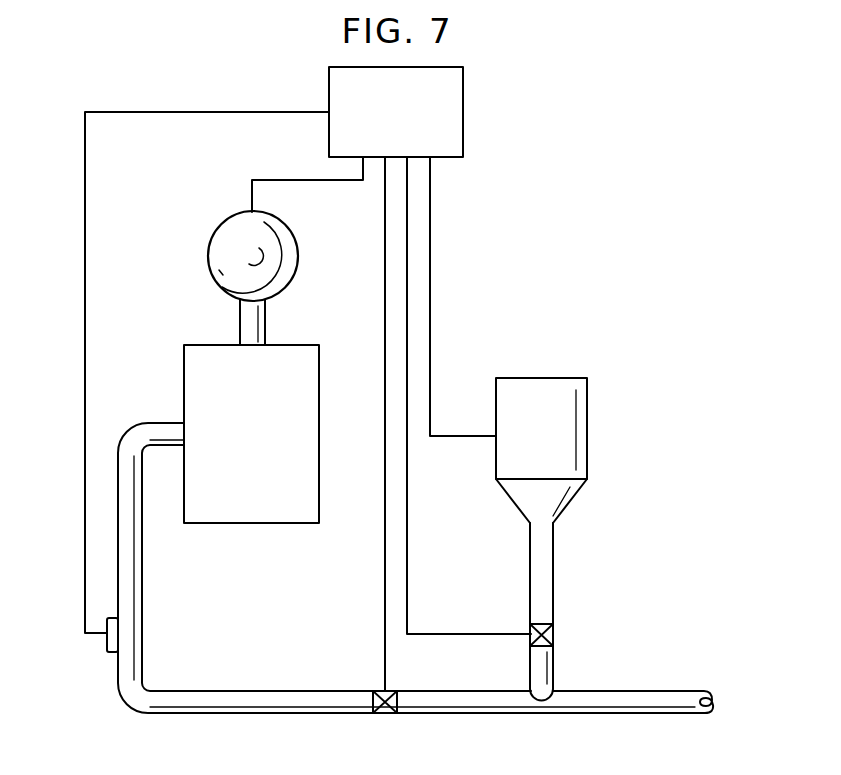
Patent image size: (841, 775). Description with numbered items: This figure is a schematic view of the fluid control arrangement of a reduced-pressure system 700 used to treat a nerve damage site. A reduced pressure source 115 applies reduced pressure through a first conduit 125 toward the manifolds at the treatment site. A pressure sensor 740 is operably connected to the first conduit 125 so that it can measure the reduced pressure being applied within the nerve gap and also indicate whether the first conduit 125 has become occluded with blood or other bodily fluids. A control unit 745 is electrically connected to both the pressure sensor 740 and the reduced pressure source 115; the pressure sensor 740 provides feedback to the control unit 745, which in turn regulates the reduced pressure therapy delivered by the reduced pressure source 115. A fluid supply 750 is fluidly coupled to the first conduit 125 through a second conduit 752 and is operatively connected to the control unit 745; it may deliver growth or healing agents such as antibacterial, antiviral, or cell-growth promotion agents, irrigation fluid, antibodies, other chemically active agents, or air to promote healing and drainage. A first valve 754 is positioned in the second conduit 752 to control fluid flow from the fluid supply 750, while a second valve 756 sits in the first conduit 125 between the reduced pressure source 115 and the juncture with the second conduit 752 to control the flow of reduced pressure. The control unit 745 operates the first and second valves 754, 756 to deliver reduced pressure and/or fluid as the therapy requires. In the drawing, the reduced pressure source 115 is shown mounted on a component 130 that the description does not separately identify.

The reduced-pressure system 700 is at (653, 95).
The control unit 745 is at (374, 125).
The reduced pressure source 115 is at (208, 259).
The reservoir 130 is at (275, 446).
The first conduit 125 is at (188, 715).
The pressure sensor 740 is at (105, 643).
The fluid supply 750 is at (590, 423).
The second conduit 752 is at (554, 568).
The first valve 754 is at (556, 638).
The second valve 756 is at (390, 715).